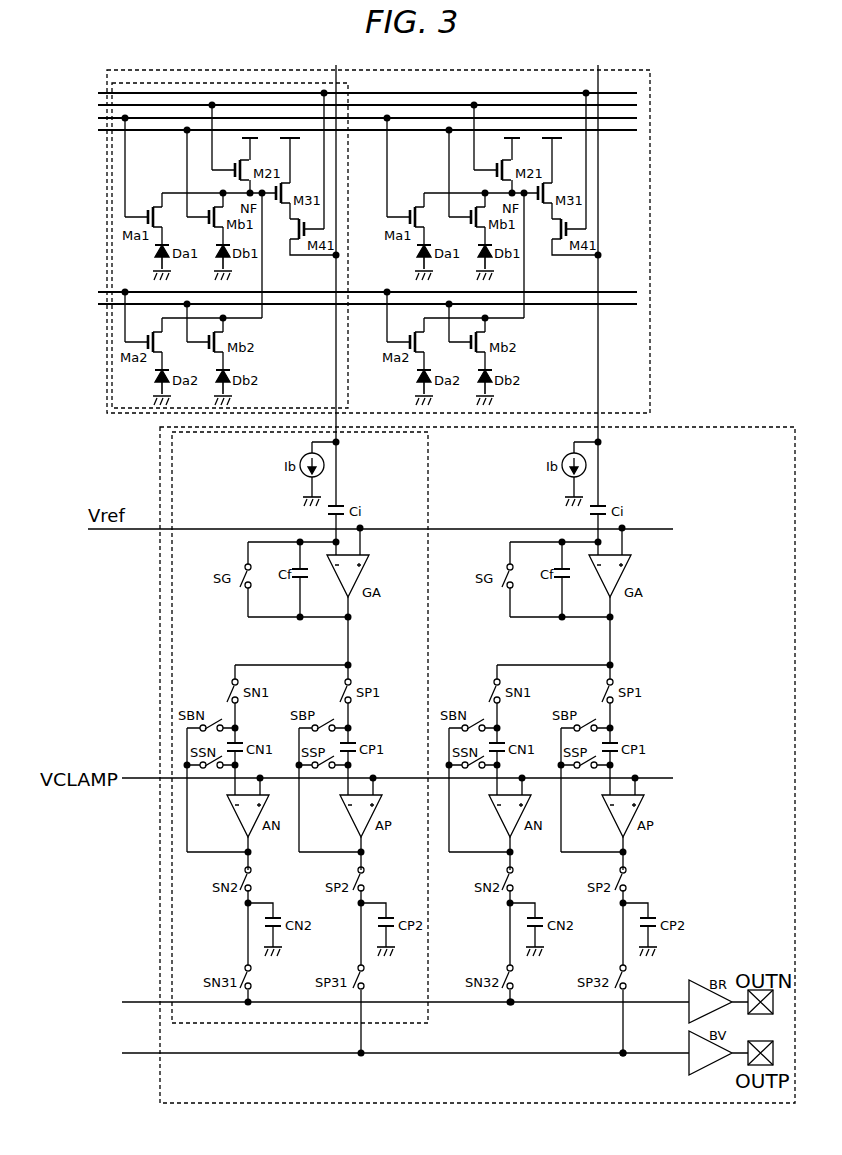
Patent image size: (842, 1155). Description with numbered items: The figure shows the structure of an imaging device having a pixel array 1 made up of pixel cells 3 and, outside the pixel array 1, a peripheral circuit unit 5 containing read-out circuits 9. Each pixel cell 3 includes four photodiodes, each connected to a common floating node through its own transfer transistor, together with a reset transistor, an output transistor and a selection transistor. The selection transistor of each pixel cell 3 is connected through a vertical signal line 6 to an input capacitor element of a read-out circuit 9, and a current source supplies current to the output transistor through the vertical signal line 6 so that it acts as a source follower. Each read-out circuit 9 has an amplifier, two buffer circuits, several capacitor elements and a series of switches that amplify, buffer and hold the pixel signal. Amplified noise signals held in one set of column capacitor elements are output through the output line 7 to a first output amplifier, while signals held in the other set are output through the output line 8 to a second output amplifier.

The pixel array 1 is at (652, 100).
The pixel cell 3 is at (300, 83).
The peripheral circuit unit 5 is at (690, 427).
The vertical signal line 6 is at (642, 461).
The output line 7 is at (652, 1001).
The output line 8 is at (644, 1054).
The read-out circuit 9 is at (430, 500).